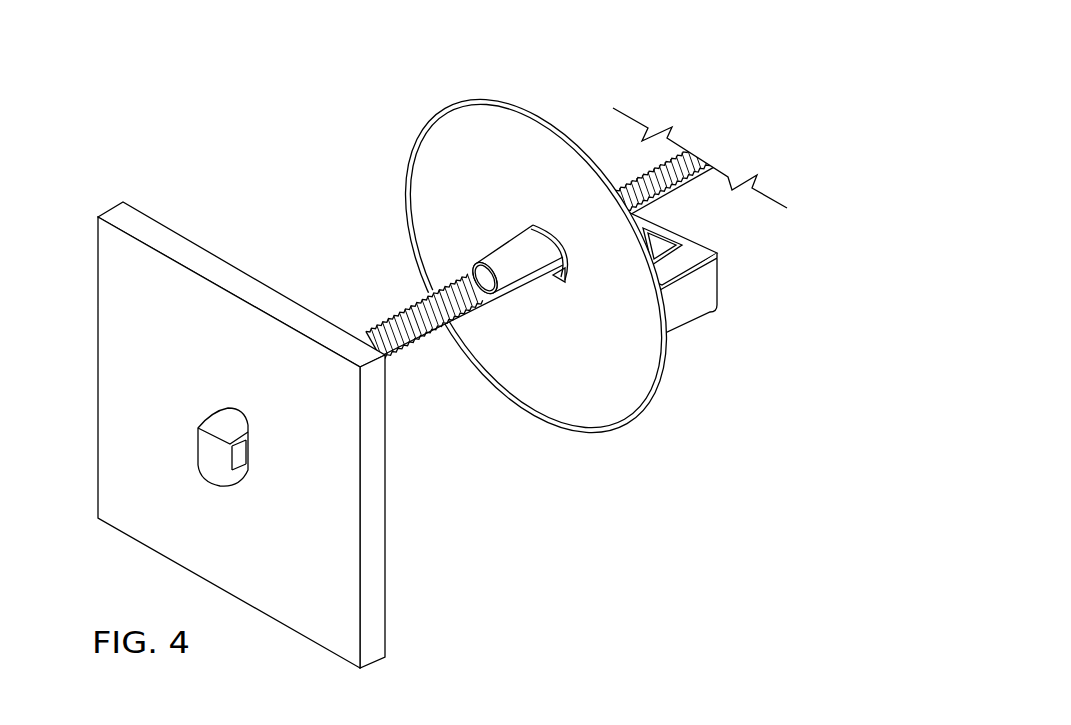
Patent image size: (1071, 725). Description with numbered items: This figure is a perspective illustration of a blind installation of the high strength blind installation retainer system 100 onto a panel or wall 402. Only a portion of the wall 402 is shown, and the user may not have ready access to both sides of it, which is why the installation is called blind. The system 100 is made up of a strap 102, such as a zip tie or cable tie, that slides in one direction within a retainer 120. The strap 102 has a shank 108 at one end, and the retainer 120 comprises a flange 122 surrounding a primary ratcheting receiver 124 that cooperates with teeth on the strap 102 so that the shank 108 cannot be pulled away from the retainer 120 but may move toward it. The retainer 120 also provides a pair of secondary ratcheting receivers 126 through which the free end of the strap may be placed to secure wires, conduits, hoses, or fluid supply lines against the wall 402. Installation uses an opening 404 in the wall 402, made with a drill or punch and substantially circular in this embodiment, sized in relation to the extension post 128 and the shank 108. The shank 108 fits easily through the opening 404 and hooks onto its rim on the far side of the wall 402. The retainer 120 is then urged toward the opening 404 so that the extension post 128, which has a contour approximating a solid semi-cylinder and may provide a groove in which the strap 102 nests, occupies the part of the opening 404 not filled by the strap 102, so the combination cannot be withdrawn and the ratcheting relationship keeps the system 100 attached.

The high strength blind installation retainer system 100 is at (272, 88).
The strap 102 is at (418, 350).
The shank 108 is at (212, 466).
The retainer 120 is at (535, 260).
The flange 122 is at (620, 430).
The ratcheting receiver 124 is at (554, 274).
The secondary ratcheting receivers 126 is at (688, 318).
The extension post 128 is at (465, 278).
The wall 402 is at (114, 207).
The opening 404 is at (221, 405).